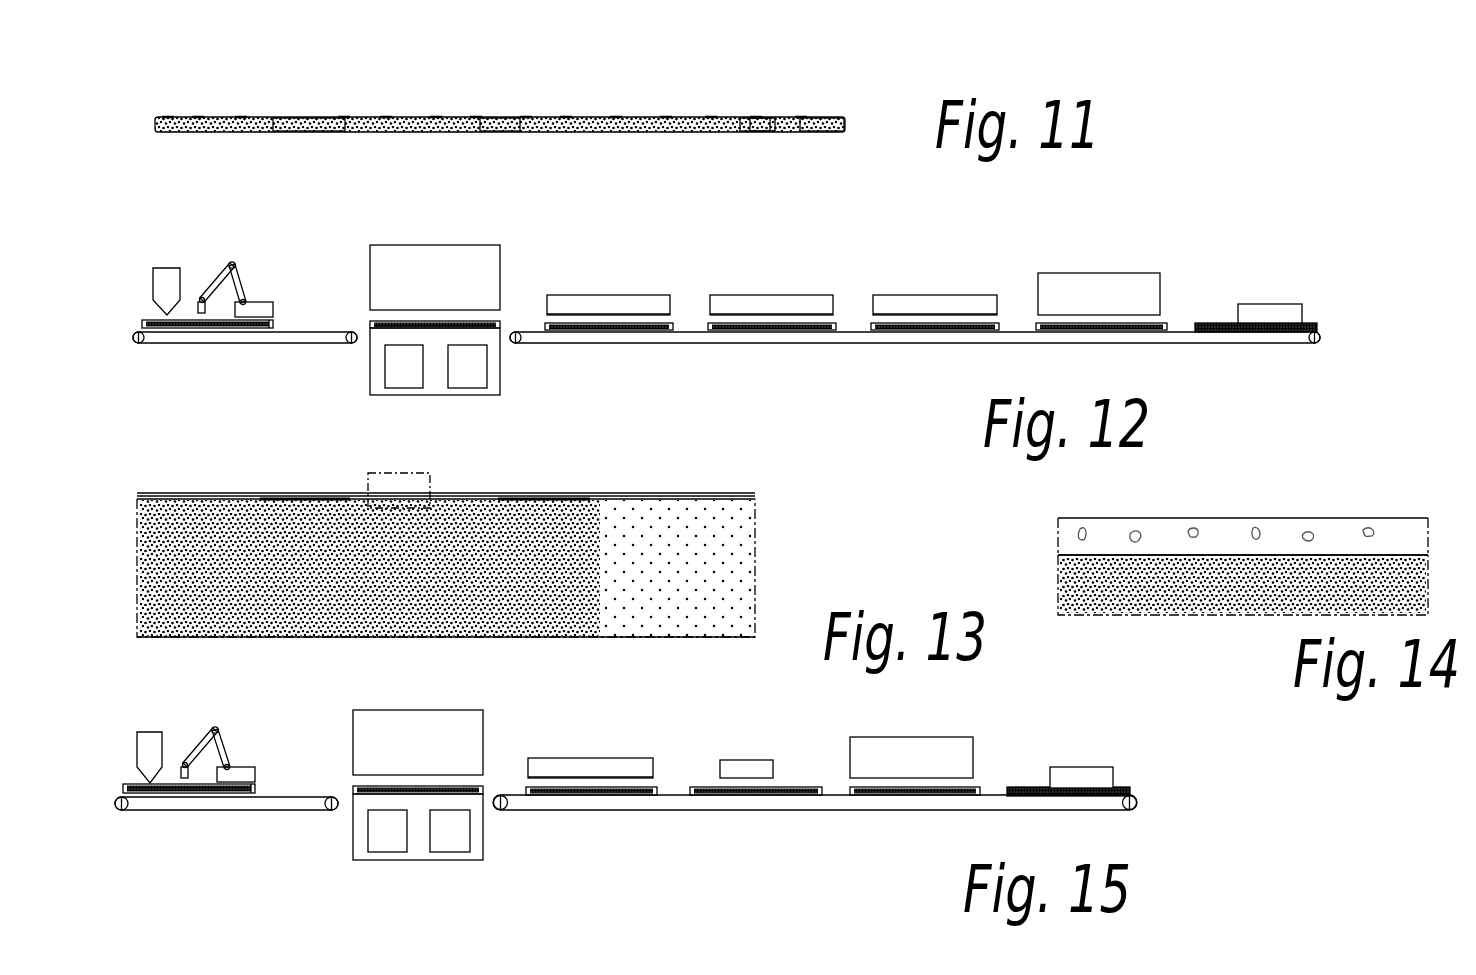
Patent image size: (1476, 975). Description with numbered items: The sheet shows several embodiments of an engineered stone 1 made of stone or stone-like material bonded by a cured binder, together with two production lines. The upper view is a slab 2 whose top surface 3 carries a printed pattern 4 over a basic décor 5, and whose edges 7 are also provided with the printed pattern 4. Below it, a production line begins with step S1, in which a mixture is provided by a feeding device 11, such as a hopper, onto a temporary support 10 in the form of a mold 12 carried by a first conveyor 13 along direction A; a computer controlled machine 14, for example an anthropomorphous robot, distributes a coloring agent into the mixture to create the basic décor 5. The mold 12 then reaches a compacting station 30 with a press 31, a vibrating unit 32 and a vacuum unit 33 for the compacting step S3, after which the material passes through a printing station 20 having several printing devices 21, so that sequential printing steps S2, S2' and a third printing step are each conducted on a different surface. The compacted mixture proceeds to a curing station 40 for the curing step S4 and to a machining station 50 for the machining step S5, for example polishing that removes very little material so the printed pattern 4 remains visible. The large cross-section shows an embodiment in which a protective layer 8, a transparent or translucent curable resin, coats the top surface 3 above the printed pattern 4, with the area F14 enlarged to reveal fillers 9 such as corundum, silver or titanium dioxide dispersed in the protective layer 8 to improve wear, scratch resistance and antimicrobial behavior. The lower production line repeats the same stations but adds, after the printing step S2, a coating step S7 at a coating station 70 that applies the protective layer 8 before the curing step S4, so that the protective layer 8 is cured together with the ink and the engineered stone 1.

In FIG. 11, the engineered stone 1 is at (142, 103).
In FIG. 11, the slab 2 is at (845, 121).
In FIG. 11, the top surface 3 is at (757, 117).
In FIG. 13, the top surface 3 is at (707, 499).
In FIG. 14, the top surface 3 is at (1397, 555).
In FIG. 11, the printed pattern 4 is at (273, 117).
In FIG. 13, the printed pattern 4 is at (547, 493).
In FIG. 11, the basic décor 5 is at (500, 117).
In FIG. 13, the basic décor 5 is at (198, 603).
In FIG. 14, the basic décor 5 is at (1057, 577).
In FIG. 11, the edges 7 is at (763, 131).
In FIG. 13, the protective layer 8 is at (158, 493).
In FIG. 14, the protective layer 8 is at (1163, 527).
In FIG. 14, the fillers 9 is at (1260, 527).
In FIG. 12, the temporary support 10 is at (145, 320).
In FIG. 15, the temporary support 10 is at (125, 784).
In FIG. 12, the feeding device 11 is at (163, 268).
In FIG. 15, the feeding device 11 is at (150, 732).
In FIG. 12, the mold 12 is at (277, 322).
In FIG. 15, the mold 12 is at (258, 788).
In FIG. 12, the first conveyor 13 is at (310, 343).
In FIG. 15, the first conveyor 13 is at (293, 810).
In FIG. 12, the computer controlled machine 14 is at (260, 302).
In FIG. 15, the computer controlled machine 14 is at (245, 767).
In FIG. 12, the printing station 20 is at (610, 297).
In FIG. 15, the printing station 20 is at (585, 768).
In FIG. 12, the printing device 21 is at (645, 297).
In FIG. 15, the printing device 21 is at (618, 765).
In FIG. 12, the compacting station 30 is at (502, 379).
In FIG. 15, the compacting station 30 is at (485, 848).
In FIG. 12, the press 31 is at (430, 252).
In FIG. 15, the press 31 is at (397, 716).
In FIG. 12, the vibrating unit 32 is at (399, 373).
In FIG. 15, the vibrating unit 32 is at (379, 840).
In FIG. 12, the vacuum unit 33 is at (470, 373).
In FIG. 15, the vacuum unit 33 is at (452, 840).
In FIG. 12, the curing station 40 is at (1105, 287).
In FIG. 15, the curing station 40 is at (917, 758).
In FIG. 12, the machining station 50 is at (1293, 304).
In FIG. 15, the machining station 50 is at (1103, 775).
In FIG. 15, the coating station 70 is at (731, 760).
In FIG. 12, the direction A is at (273, 362).
In FIG. 15, the direction A is at (255, 825).
In FIG. 13, the area F14 is at (370, 475).
In FIG. 12, the step of providing a mixture S1 is at (195, 245).
In FIG. 15, the step of providing a mixture S1 is at (180, 718).
In FIG. 12, the printing step S2 is at (611, 221).
In FIG. 15, the printing step S2 is at (586, 688).
In FIG. 12, the second printing step S2' is at (795, 222).
In FIG. 12, the compacting step S3 is at (485, 222).
In FIG. 15, the compacting step S3 is at (455, 690).
In FIG. 12, the curing step S4 is at (1138, 257).
In FIG. 15, the curing step S4 is at (950, 722).
In FIG. 12, the machining step S5 is at (1262, 288).
In FIG. 15, the machining step S5 is at (1072, 757).
In FIG. 15, the coating step S7 is at (770, 734).